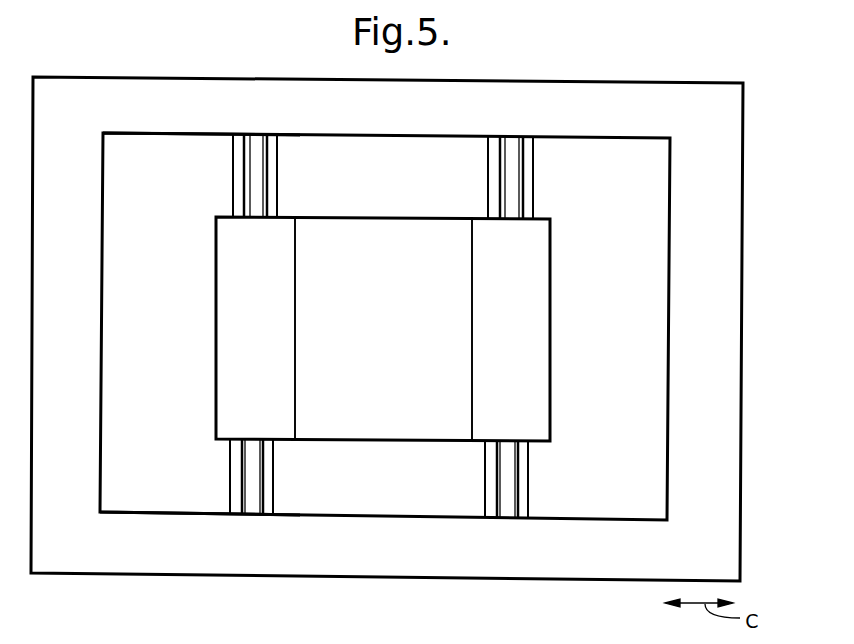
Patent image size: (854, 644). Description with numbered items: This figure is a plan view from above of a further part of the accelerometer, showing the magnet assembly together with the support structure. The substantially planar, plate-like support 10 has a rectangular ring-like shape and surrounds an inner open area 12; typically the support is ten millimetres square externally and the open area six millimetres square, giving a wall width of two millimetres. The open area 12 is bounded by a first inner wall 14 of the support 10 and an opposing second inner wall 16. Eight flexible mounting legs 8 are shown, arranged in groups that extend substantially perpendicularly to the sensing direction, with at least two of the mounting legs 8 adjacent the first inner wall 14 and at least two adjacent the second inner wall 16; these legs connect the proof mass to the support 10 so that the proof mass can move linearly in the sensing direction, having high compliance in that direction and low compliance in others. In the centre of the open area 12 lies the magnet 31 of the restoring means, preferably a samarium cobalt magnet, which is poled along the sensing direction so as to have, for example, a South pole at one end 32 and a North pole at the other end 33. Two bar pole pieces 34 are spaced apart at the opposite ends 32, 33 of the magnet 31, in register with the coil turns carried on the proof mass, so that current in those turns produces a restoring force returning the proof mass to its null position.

The mounting legs 8 is at (238, 175).
The support 10 is at (725, 193).
The inner open area 12 is at (643, 324).
The first inner wall 14 is at (179, 135).
The second inner wall 16 is at (182, 512).
The magnet 31 is at (372, 350).
The one end 32 is at (460, 386).
The other end 33 is at (303, 376).
The bar pole pieces 34 is at (232, 280).